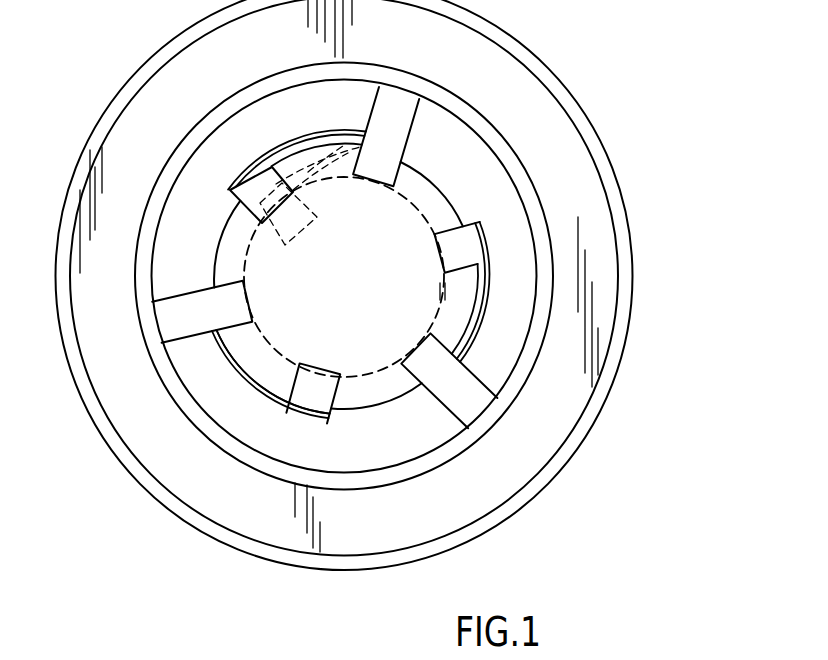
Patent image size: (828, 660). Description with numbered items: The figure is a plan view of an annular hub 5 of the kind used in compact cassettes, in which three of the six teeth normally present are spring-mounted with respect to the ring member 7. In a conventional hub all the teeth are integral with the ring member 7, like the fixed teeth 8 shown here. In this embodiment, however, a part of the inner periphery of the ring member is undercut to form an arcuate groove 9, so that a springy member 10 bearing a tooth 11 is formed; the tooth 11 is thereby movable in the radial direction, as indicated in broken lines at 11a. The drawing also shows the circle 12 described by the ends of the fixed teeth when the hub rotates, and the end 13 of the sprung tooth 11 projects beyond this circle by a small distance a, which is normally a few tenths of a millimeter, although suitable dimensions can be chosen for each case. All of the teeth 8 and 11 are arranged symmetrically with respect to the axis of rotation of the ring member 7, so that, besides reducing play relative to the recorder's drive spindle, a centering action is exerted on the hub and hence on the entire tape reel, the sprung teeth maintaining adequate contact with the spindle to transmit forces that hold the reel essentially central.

The annular hub 5 is at (539, 46).
The ring member 7 is at (540, 127).
The fixed teeth 8 is at (405, 126).
The arcuate groove 9 is at (266, 398).
The springy member 10 is at (238, 367).
The tooth 11 is at (330, 392).
The tooth in displaced position 11a is at (302, 220).
The circle 12 is at (415, 202).
The end of the sprung tooth 13 is at (435, 246).
The distance a is at (456, 292).